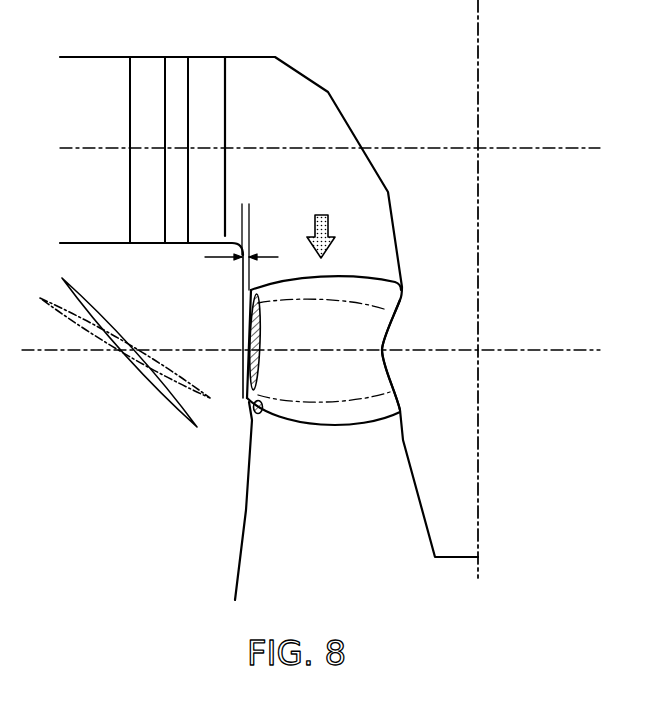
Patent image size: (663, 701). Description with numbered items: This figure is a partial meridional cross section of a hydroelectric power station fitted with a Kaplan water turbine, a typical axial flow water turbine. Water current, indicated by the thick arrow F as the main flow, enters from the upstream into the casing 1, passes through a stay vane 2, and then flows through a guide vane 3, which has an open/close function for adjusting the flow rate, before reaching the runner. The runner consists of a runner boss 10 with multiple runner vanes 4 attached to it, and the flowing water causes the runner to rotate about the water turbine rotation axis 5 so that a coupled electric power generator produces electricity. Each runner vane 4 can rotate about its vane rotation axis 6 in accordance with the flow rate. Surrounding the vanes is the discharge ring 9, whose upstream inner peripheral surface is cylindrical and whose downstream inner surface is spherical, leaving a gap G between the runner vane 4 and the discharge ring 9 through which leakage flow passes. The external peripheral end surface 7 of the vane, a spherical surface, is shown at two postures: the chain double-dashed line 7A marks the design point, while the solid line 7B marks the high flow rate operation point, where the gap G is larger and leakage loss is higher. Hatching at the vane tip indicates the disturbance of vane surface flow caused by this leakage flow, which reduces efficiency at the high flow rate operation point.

The casing 1 is at (35, 210).
The stay vane 2 is at (148, 64).
The guide vane 3 is at (205, 64).
The runner vane 4 is at (331, 430).
The water turbine rotation axis 5 is at (480, 105).
The vane rotation axis 6 is at (425, 346).
The external peripheral end surface 7 is at (249, 305).
The external peripheral end surface at design point posture 7A is at (80, 344).
The external peripheral end surface at high flow rate operation point posture 7B is at (140, 380).
The discharge ring 9 is at (243, 277).
The runner boss 10 is at (465, 490).
The gap G is at (247, 255).
The water current (main flow) F is at (328, 228).